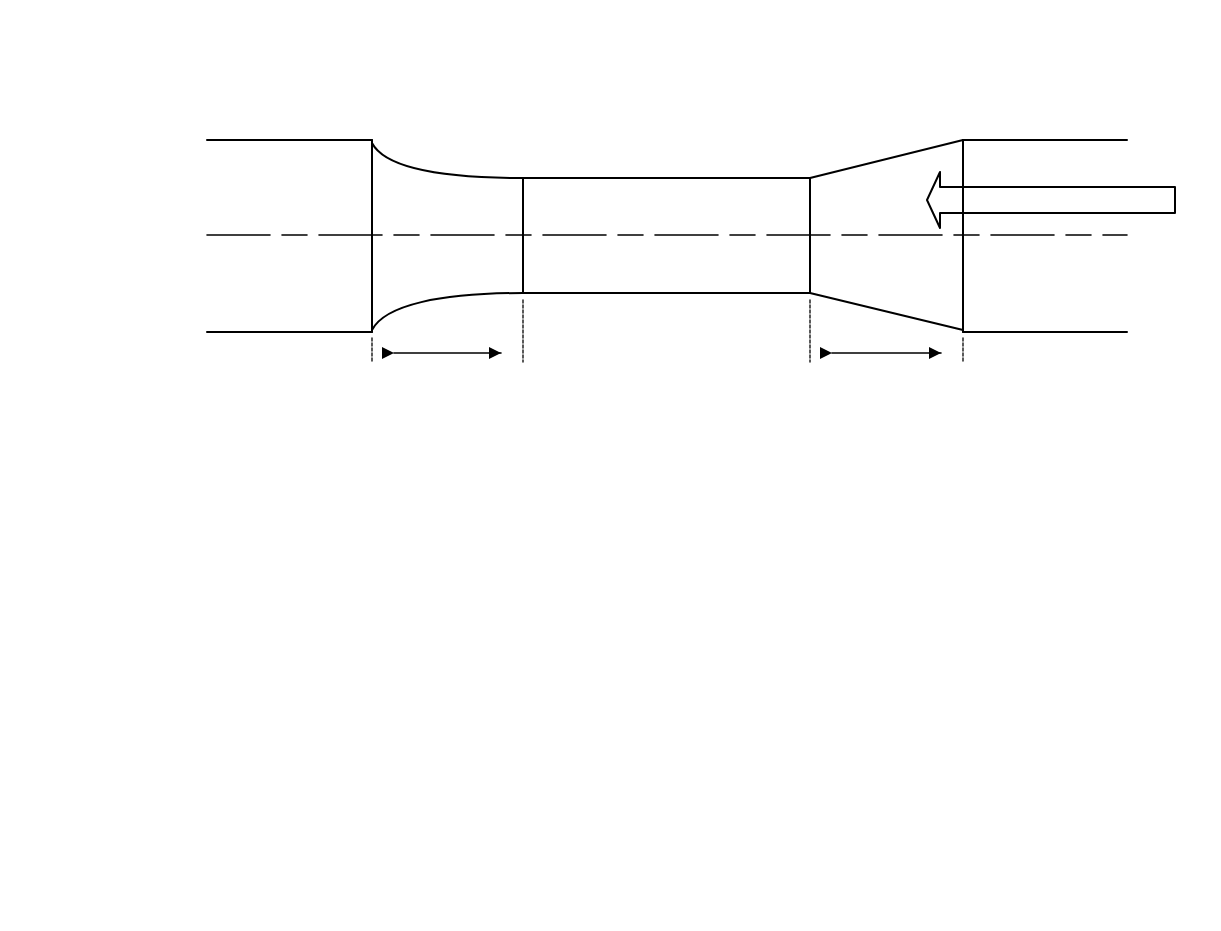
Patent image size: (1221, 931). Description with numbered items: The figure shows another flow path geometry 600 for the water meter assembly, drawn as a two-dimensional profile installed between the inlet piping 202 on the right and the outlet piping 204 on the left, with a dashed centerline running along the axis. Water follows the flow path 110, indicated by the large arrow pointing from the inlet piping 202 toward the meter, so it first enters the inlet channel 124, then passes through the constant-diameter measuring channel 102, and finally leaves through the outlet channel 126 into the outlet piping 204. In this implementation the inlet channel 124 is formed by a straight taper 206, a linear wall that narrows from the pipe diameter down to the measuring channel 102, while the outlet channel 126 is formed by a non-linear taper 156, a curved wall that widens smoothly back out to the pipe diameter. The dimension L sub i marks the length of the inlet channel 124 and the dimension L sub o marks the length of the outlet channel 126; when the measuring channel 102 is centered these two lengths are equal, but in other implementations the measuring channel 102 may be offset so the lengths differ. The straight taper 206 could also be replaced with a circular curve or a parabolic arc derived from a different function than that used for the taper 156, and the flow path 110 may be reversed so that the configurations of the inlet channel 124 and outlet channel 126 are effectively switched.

The flow path geometry 600 is at (312, 64).
The non-linear taper 156 is at (433, 166).
The straight taper 206 is at (875, 162).
The flow path 110 is at (1051, 200).
The outlet piping 204 is at (230, 334).
The outlet channel 126 is at (358, 323).
The measuring channel 102 is at (677, 295).
The inlet channel 124 is at (975, 315).
The inlet piping 202 is at (1083, 334).